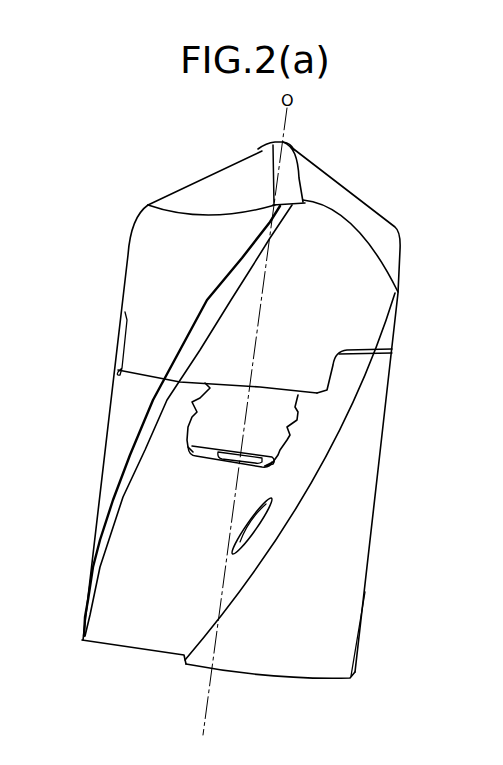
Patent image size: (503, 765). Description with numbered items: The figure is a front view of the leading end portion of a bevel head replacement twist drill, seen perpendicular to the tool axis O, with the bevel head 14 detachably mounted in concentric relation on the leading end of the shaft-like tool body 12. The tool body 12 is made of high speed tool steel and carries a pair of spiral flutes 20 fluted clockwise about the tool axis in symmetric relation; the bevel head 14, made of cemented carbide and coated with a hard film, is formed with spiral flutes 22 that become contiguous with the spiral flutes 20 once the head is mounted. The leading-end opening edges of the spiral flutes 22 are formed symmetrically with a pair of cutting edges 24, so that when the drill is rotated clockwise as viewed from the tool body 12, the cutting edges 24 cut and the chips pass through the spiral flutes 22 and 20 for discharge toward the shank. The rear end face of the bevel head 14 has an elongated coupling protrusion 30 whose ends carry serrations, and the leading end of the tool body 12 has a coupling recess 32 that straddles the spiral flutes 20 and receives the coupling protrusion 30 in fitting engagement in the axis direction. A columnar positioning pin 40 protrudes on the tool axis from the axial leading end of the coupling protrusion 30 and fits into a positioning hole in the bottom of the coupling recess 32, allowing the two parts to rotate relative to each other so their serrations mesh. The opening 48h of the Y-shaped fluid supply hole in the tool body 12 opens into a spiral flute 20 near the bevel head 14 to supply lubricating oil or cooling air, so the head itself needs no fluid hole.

The tool body 12 is at (388, 606).
The bevel head 14 is at (118, 205).
The spiral flutes 20 is at (157, 607).
The spiral flutes 22 is at (295, 315).
The cutting edges 24 is at (300, 166).
The coupling protrusion 30 is at (262, 422).
The coupling recess 32 is at (237, 365).
The positioning pin 40 is at (230, 460).
The opening of fluid supply hole 48h is at (257, 523).